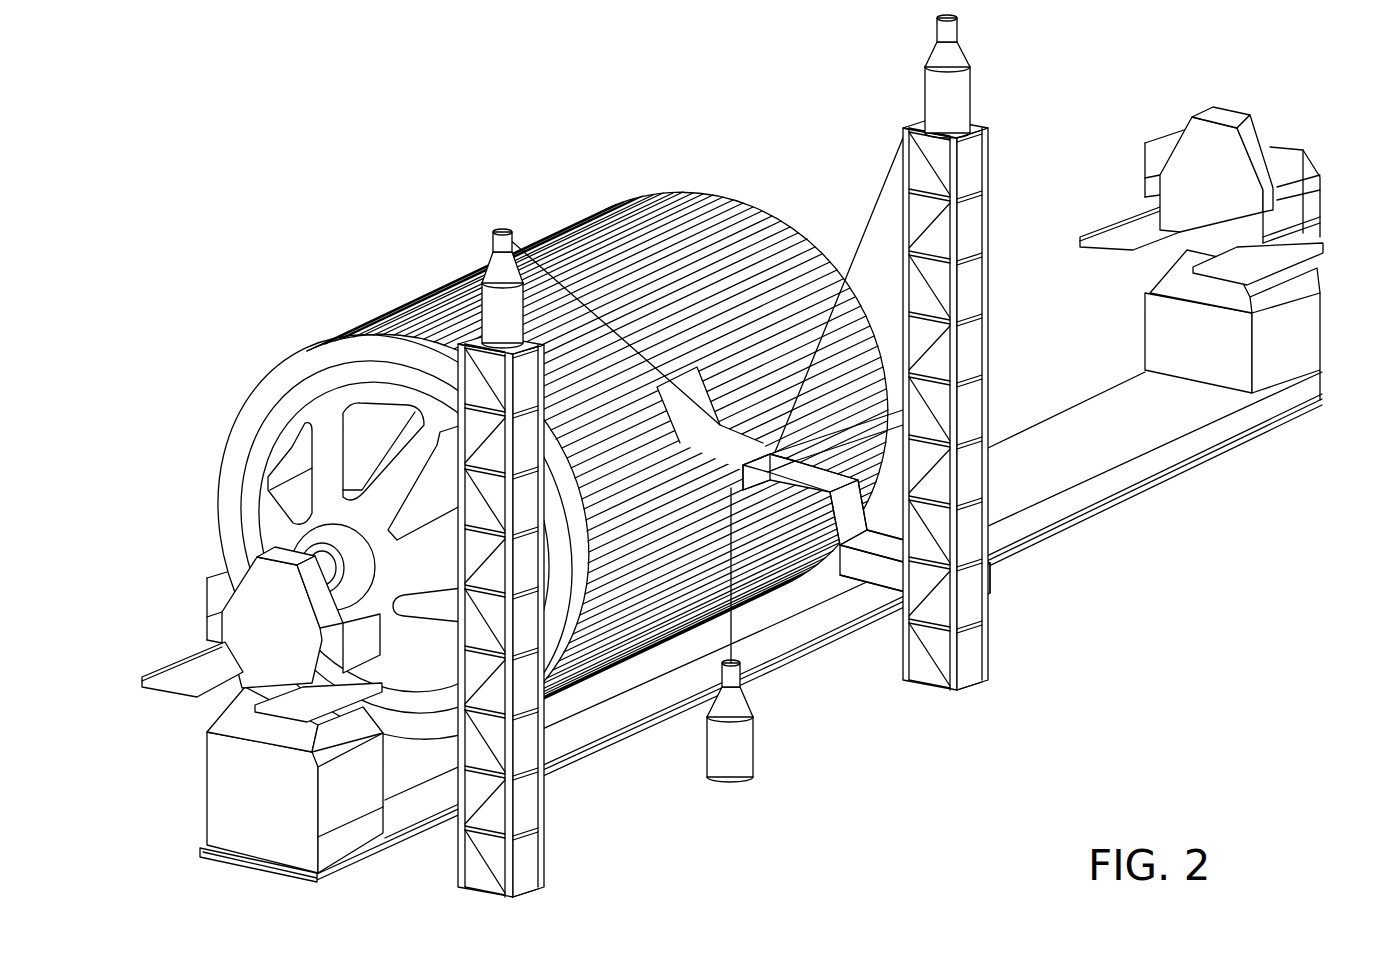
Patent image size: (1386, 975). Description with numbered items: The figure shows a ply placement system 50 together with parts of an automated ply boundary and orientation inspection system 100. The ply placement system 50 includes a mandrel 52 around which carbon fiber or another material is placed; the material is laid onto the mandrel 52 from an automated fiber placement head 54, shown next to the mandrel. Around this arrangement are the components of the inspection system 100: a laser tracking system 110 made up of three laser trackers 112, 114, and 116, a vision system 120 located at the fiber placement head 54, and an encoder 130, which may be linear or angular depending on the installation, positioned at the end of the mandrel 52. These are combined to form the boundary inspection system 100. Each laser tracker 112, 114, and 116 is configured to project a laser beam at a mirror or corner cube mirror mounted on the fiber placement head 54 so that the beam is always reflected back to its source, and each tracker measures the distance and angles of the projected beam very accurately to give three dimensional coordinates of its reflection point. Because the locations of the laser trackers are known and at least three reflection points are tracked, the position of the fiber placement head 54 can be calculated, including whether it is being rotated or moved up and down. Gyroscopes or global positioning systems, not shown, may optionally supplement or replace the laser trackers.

The ply placement system 50 is at (505, 128).
The mandrel 52 is at (335, 410).
The automated fiber placement (AFP) head 54 is at (860, 584).
The automated ply boundary and orientation inspection system 100 is at (630, 822).
The laser tracking system 110 is at (1012, 108).
The laser tracker 112 is at (968, 52).
The laser tracker 114 is at (731, 780).
The laser tracker 116 is at (505, 238).
The vision system 120 is at (757, 476).
The encoder 130 is at (262, 575).